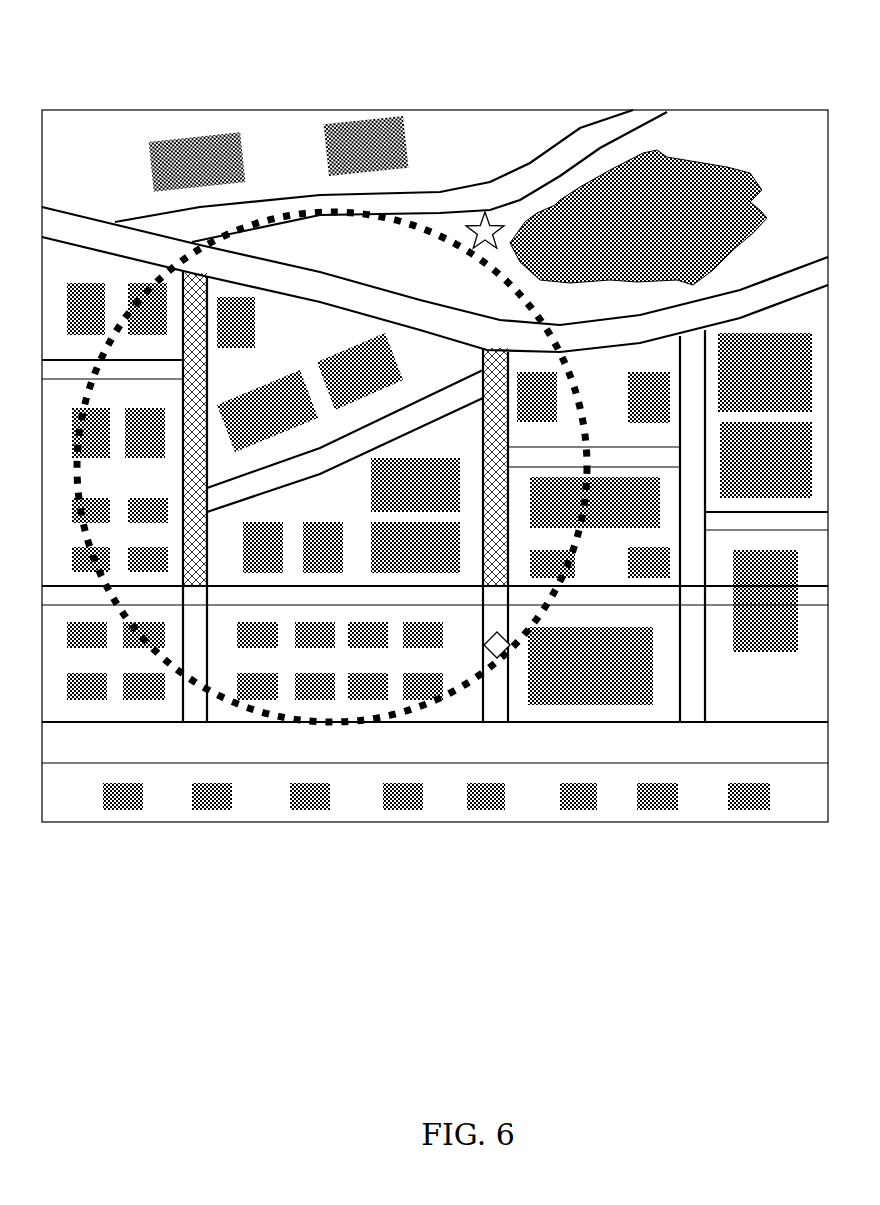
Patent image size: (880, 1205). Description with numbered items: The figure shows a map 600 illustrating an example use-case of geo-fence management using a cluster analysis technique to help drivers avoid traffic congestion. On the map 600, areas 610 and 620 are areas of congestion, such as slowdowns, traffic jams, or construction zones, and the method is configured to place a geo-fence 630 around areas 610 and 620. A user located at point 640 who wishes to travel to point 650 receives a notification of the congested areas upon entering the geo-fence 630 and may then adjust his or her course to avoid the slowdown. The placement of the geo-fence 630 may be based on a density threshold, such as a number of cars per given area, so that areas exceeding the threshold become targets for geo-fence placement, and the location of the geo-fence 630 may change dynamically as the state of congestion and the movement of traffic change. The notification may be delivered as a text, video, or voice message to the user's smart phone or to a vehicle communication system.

The map 600 is at (462, 48).
The area of congestion 610 is at (190, 379).
The area of congestion 620 is at (495, 447).
The geo-fence 630 is at (541, 312).
The point 640 is at (500, 621).
The point 650 is at (485, 204).